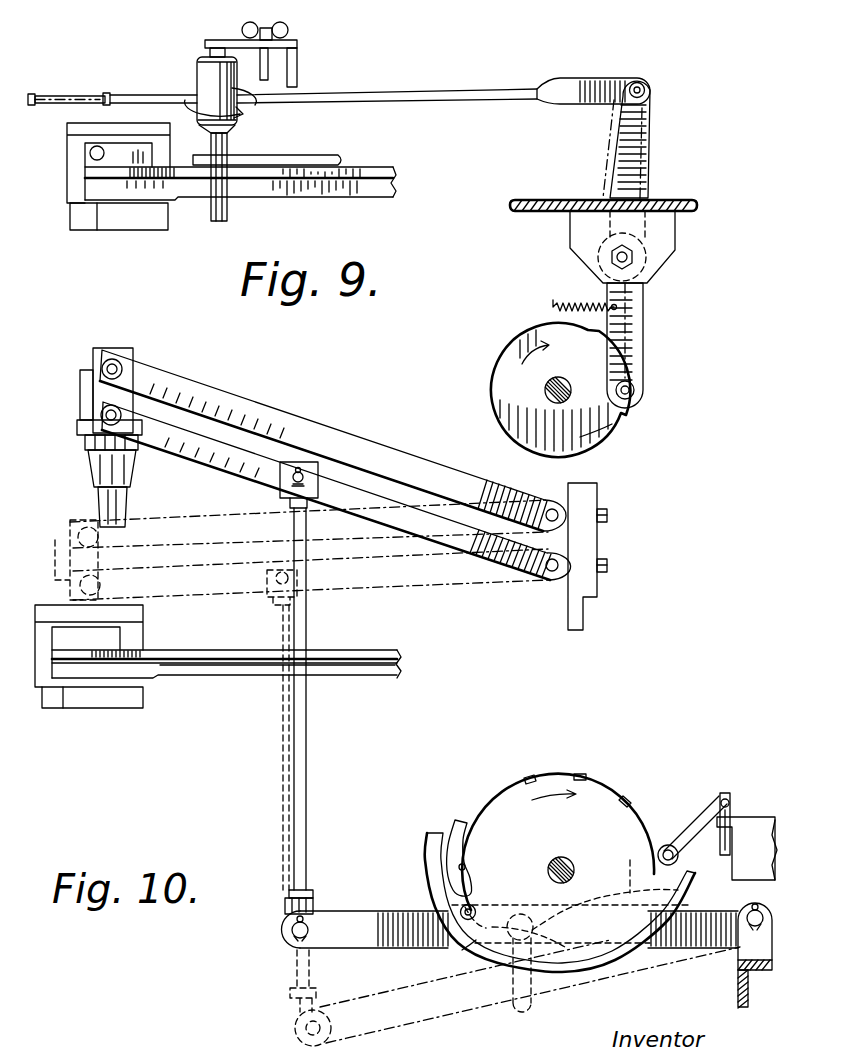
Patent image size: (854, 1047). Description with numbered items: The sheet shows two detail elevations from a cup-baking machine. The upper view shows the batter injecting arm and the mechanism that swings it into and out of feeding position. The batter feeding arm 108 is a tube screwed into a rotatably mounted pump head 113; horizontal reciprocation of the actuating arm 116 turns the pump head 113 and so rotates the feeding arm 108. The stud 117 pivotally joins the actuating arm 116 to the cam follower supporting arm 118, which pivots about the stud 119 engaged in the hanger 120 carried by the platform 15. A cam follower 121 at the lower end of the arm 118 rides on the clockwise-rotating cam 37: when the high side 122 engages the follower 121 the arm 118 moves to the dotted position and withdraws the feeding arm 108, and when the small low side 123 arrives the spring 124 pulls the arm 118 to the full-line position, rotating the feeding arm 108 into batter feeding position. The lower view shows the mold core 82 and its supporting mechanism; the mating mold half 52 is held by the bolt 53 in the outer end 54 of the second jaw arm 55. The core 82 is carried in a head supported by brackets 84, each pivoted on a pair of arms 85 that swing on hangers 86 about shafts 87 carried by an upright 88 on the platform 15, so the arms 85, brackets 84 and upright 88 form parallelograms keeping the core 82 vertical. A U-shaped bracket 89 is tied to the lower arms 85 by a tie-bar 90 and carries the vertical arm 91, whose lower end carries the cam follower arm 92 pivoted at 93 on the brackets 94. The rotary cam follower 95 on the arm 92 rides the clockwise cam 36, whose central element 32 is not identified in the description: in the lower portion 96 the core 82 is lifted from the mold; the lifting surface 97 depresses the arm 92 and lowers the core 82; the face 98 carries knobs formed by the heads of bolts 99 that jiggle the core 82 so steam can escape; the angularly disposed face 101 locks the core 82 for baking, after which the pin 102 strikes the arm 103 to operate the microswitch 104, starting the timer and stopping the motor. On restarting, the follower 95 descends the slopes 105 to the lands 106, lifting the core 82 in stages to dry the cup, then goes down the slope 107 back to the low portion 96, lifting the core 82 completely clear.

In FIG. 9, the platform 15 is at (682, 203).
In FIG. 9, the drive shaft 32 is at (572, 392).
In FIG. 10, the drive shaft 32 is at (570, 858).
In FIG. 10, the cam 36 is at (697, 879).
In FIG. 9, the cam 37 is at (614, 425).
In FIG. 9, the mating mold half 52 is at (74, 192).
In FIG. 10, the mating mold half 52 is at (38, 690).
In FIG. 9, the bolt 53 is at (90, 153).
In FIG. 9, the outer end 54 is at (118, 195).
In FIG. 10, the outer end 54 is at (67, 655).
In FIG. 10, the second jaw arm 55 is at (352, 668).
In FIG. 10, the mold core 82 is at (97, 499).
In FIG. 10, the brackets 84 is at (94, 352).
In FIG. 10, the arms 85 is at (220, 394).
In FIG. 10, the hangers 86 is at (555, 500).
In FIG. 10, the shafts 87 is at (557, 567).
In FIG. 10, the upright 88 is at (587, 498).
In FIG. 10, the U-shaped bracket 89 is at (320, 463).
In FIG. 10, the tie-bar 90 is at (303, 482).
In FIG. 10, the vertical arm 91 is at (292, 707).
In FIG. 10, the cam follower arm 92 is at (327, 917).
In FIG. 10, the pivot center 93 is at (773, 915).
In FIG. 10, the brackets 94 is at (773, 962).
In FIG. 10, the rotary cam follower 95 is at (530, 1005).
In FIG. 10, the lower portion 96 is at (571, 916).
In FIG. 10, the lifting surface 97 is at (624, 866).
In FIG. 10, the face 98 is at (556, 770).
In FIG. 10, the bolts 99 is at (628, 792).
In FIG. 10, the angularly disposed face 101 is at (508, 783).
In FIG. 10, the pin 102 is at (663, 837).
In FIG. 10, the arm 103 is at (693, 834).
In FIG. 10, the microswitch 104 is at (760, 850).
In FIG. 10, the slopes 105 is at (456, 837).
In FIG. 10, the lands 106 is at (466, 867).
In FIG. 10, the slope 107 is at (466, 946).
In FIG. 9, the batter feeding arm 108 is at (78, 95).
In FIG. 9, the pump head 113 is at (199, 76).
In FIG. 9, the actuating arm 116 is at (413, 94).
In FIG. 9, the stud 117 is at (651, 84).
In FIG. 9, the cam follower supporting arm 118 is at (649, 130).
In FIG. 9, the stud 119 is at (634, 260).
In FIG. 9, the hanger 120 is at (676, 240).
In FIG. 9, the cam follower 121 is at (640, 390).
In FIG. 9, the high side 122 is at (492, 398).
In FIG. 9, the low side 123 is at (600, 342).
In FIG. 9, the spring 124 is at (553, 300).